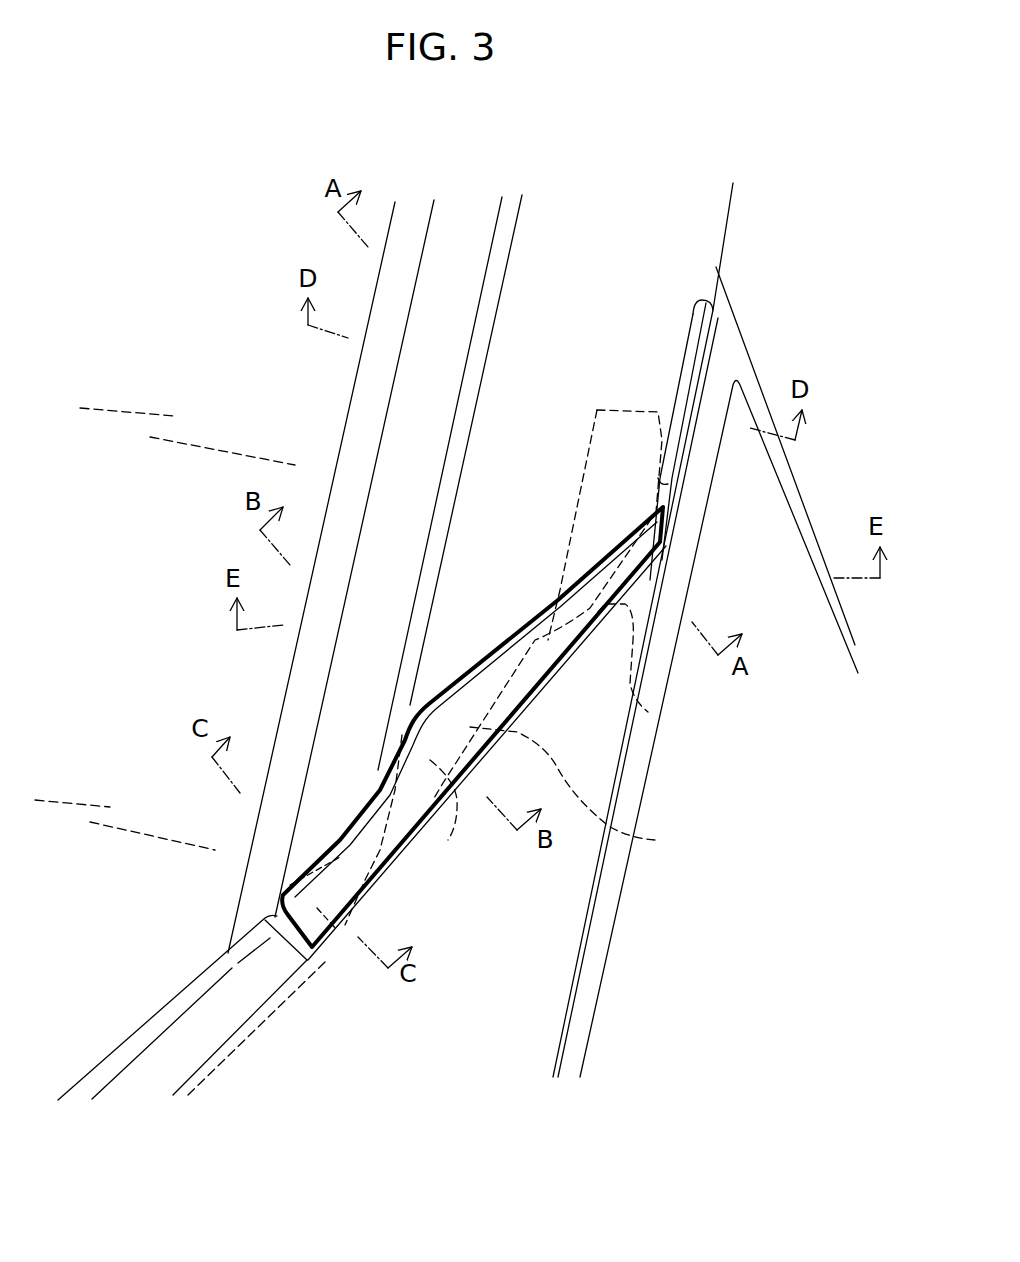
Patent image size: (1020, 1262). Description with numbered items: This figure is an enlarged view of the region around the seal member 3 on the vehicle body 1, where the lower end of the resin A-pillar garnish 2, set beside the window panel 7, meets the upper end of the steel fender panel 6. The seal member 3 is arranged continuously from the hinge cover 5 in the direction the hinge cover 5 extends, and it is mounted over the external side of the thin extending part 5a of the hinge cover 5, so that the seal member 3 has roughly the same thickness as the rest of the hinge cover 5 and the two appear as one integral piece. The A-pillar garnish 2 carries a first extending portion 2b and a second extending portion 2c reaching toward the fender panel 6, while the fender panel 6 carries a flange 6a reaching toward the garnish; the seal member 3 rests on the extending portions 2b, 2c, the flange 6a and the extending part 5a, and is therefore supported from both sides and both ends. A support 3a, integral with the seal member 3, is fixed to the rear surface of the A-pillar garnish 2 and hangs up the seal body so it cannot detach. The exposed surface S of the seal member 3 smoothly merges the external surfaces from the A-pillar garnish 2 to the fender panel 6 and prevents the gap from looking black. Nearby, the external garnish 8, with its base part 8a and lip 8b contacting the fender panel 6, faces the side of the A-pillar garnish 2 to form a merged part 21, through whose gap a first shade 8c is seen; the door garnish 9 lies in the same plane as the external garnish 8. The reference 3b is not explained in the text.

The vehicle body 1 is at (195, 262).
The A-pillar garnish 2 is at (546, 409).
The first extending portion 2b is at (637, 837).
The second extending portion 2c is at (373, 840).
The seal member 3 is at (427, 762).
The support 3a is at (618, 508).
The weather strip lip portion 3b is at (620, 573).
The hinge cover 5 is at (193, 1034).
The extending part 5a is at (343, 920).
The fender panel 6 is at (464, 959).
The flange 6a is at (628, 682).
The window panel 7 is at (124, 652).
The external garnish 8 is at (722, 903).
The base part 8a is at (826, 802).
The lip 8b is at (607, 880).
The first shade 8c is at (688, 417).
The door garnish 9 is at (794, 310).
The merged part 21 is at (670, 363).
The exposed surface S is at (481, 710).